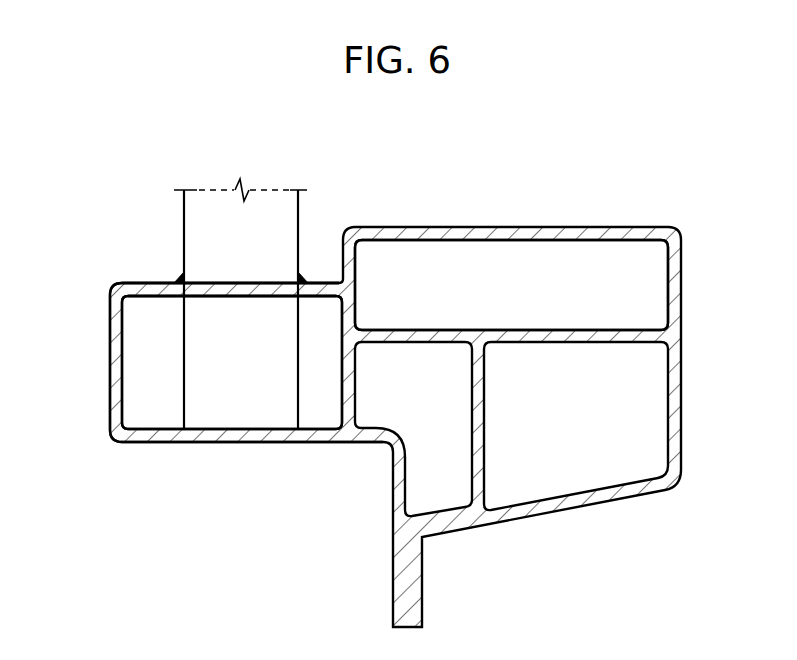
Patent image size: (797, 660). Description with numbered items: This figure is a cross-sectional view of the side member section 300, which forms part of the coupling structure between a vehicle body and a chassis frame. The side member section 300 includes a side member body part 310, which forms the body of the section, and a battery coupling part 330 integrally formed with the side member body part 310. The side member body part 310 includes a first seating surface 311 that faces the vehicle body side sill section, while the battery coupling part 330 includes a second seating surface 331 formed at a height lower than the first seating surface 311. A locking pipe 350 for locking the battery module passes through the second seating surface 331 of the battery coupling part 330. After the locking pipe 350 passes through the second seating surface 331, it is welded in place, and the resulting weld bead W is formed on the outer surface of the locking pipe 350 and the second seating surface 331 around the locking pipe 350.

The side member section 300 is at (294, 129).
The side member body part 310 is at (683, 413).
The first seating surface 311 is at (463, 227).
The battery coupling part 330 is at (118, 382).
The second seating surface 331 is at (233, 283).
The locking pipe 350 is at (237, 395).
The weld bead W is at (178, 278).